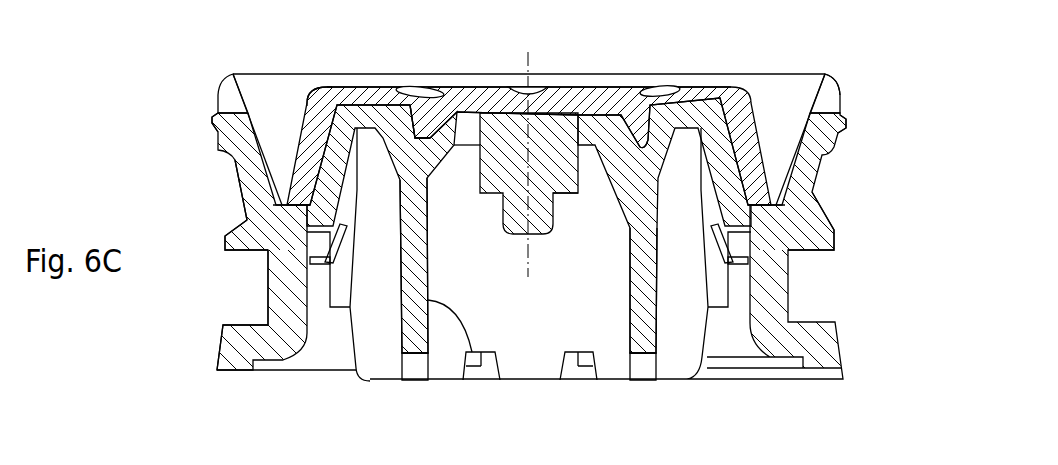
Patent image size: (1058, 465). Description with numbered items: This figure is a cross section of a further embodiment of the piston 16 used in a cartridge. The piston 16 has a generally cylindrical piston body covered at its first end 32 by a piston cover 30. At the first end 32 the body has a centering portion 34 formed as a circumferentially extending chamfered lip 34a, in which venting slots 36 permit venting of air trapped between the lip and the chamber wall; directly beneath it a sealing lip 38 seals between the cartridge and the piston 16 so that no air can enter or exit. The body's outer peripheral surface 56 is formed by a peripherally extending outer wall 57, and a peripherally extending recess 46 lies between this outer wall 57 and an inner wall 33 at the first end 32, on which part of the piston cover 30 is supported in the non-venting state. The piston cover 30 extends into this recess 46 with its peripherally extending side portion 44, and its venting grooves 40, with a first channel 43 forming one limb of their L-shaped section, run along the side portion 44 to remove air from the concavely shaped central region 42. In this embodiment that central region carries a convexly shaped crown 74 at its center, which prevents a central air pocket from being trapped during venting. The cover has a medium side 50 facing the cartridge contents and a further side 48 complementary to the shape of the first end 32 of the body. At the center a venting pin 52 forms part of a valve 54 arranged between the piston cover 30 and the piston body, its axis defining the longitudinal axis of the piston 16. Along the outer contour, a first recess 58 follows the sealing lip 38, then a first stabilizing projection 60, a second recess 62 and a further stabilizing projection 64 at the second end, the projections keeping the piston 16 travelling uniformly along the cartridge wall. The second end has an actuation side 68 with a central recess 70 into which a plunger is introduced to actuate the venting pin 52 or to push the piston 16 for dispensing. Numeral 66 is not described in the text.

The piston 16 is at (370, 362).
The piston cover 30 is at (738, 100).
The first end 32 is at (420, 90).
The inner wall 33 is at (822, 72).
The centering portion 34 is at (582, 73).
The chamfered lip 34a is at (231, 75).
The venting slots 36 is at (228, 100).
The sealing lip 38 is at (849, 128).
The venting grooves 40 is at (410, 92).
The concavely shaped central region 42 is at (553, 100).
The first channel 43 is at (389, 88).
The side portion 44 is at (324, 103).
The recess 46 is at (271, 102).
The further side 48 is at (400, 183).
The medium side 50 is at (586, 110).
The venting pin 52 is at (540, 233).
The valve 54 is at (568, 172).
The outer peripheral surface 56 is at (225, 123).
The outer wall 57 is at (807, 228).
The first recess 58 is at (240, 177).
The first stabilizing projection 60 is at (226, 240).
The second recess 62 is at (268, 274).
The further stabilizing projection 64 is at (237, 372).
The bottom flange 66 is at (221, 343).
The actuation side 68 is at (430, 367).
The central recess 70 is at (468, 352).
The convexly shaped crown 74 is at (657, 320).